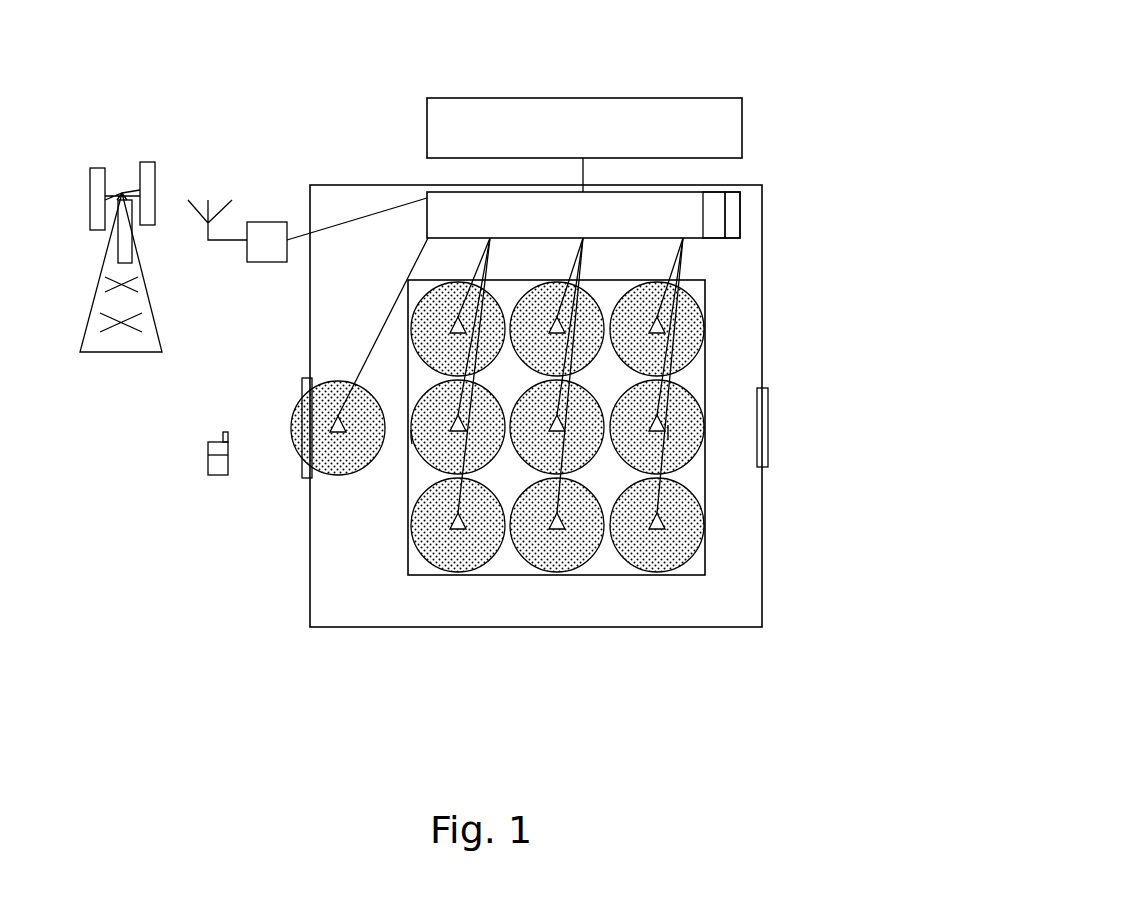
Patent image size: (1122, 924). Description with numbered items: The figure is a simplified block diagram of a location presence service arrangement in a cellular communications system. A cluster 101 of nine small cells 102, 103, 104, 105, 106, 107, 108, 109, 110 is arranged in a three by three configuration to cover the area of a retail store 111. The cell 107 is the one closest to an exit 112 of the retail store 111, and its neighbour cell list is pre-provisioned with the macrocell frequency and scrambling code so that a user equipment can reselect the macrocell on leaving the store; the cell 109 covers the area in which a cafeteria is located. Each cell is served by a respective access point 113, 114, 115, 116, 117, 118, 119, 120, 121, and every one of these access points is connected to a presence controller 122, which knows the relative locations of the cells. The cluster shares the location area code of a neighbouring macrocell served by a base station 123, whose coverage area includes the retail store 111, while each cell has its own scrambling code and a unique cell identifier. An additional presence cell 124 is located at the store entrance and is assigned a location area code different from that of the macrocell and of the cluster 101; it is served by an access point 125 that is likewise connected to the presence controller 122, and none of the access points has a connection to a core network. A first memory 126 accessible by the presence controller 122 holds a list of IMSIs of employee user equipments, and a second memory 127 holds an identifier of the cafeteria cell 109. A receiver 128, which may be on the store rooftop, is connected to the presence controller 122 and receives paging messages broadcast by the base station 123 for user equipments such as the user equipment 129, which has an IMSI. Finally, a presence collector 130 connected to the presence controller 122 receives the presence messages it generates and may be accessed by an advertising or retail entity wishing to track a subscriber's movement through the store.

The cluster of small cells 101 is at (396, 556).
The small cell 102 is at (416, 322).
The small cell 103 is at (552, 311).
The small cell 104 is at (733, 311).
The small cell 105 is at (420, 442).
The small cell 106 is at (581, 535).
The small cell closest to exit 107 is at (818, 340).
The small cell 108 is at (437, 584).
The cafeteria small cell 109 is at (544, 584).
The small cell 110 is at (734, 525).
The retail store 111 is at (737, 627).
The exit 112 is at (768, 418).
The access point 113 is at (455, 317).
The access point 114 is at (553, 320).
The access point 115 is at (660, 316).
The access point 116 is at (412, 440).
The access point 117 is at (566, 437).
The access point 118 is at (668, 432).
The access point 119 is at (455, 524).
The access point 120 is at (558, 530).
The access point 121 is at (665, 524).
The presence controller 122 is at (427, 192).
The base station 123 is at (112, 352).
The presence cell 124 is at (298, 427).
The presence cell access point 125 is at (338, 416).
The first memory 126 is at (712, 202).
The second memory 127 is at (732, 228).
The receiver 128 is at (267, 222).
The user equipment 129 is at (208, 460).
The presence collector 130 is at (697, 98).